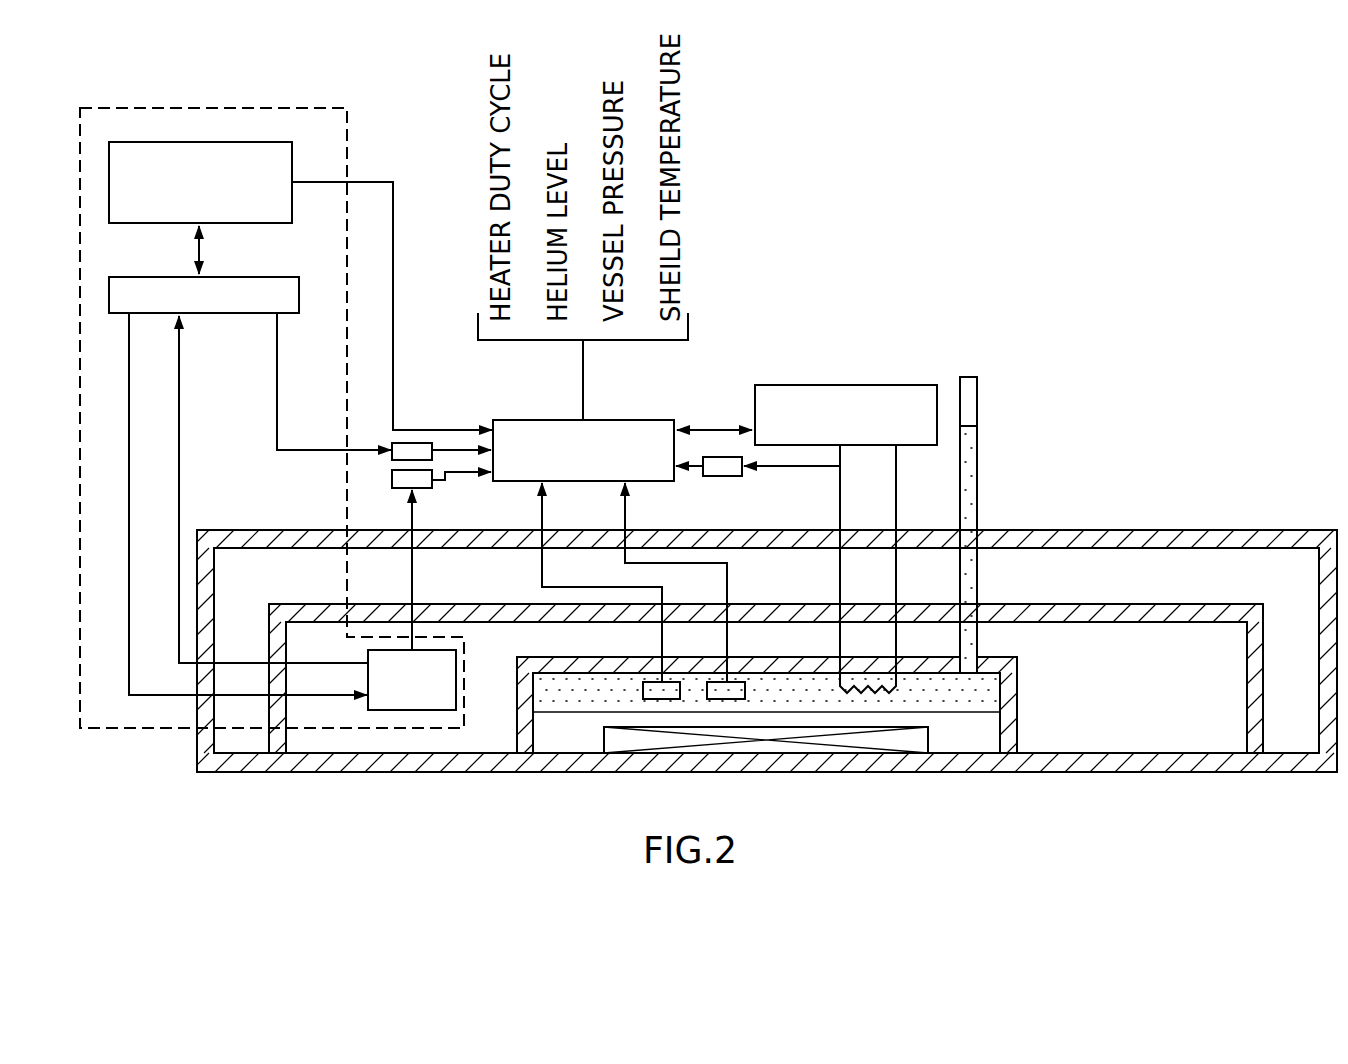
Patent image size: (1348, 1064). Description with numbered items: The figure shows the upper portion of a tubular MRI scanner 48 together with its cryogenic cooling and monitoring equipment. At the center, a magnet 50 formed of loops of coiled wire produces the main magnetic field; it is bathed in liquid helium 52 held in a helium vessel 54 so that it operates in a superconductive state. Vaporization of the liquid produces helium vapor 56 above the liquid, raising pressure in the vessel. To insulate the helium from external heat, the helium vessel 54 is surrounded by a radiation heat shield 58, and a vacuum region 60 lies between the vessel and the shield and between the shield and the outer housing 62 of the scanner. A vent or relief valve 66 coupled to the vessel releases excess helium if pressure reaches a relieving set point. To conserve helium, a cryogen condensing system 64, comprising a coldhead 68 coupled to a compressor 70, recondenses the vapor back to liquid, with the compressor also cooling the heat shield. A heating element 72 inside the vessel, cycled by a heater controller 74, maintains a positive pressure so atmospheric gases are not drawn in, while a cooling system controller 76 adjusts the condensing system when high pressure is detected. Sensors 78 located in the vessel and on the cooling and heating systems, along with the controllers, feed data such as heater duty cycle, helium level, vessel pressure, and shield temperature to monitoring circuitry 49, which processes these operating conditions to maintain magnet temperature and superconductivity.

The MRI scanner 48 is at (1196, 91).
The monitoring circuitry 49 is at (632, 420).
The magnet 50 is at (770, 742).
The liquid helium 52 is at (967, 740).
The helium vessel 54 is at (1018, 737).
The helium vapor 56 is at (985, 692).
The radiation heat shield 58 is at (1230, 612).
The vacuum region 60 is at (1177, 576).
The outer housing 62 is at (1140, 537).
The cryogen condensing system 64 is at (275, 108).
The vent or relief valve 66 is at (970, 377).
The coldhead 68 is at (456, 680).
The compressor 70 is at (109, 290).
The heating element 72 is at (870, 686).
The heater controller 74 is at (847, 385).
The cooling system controller 76 is at (109, 178).
The sensors 78 is at (392, 482).